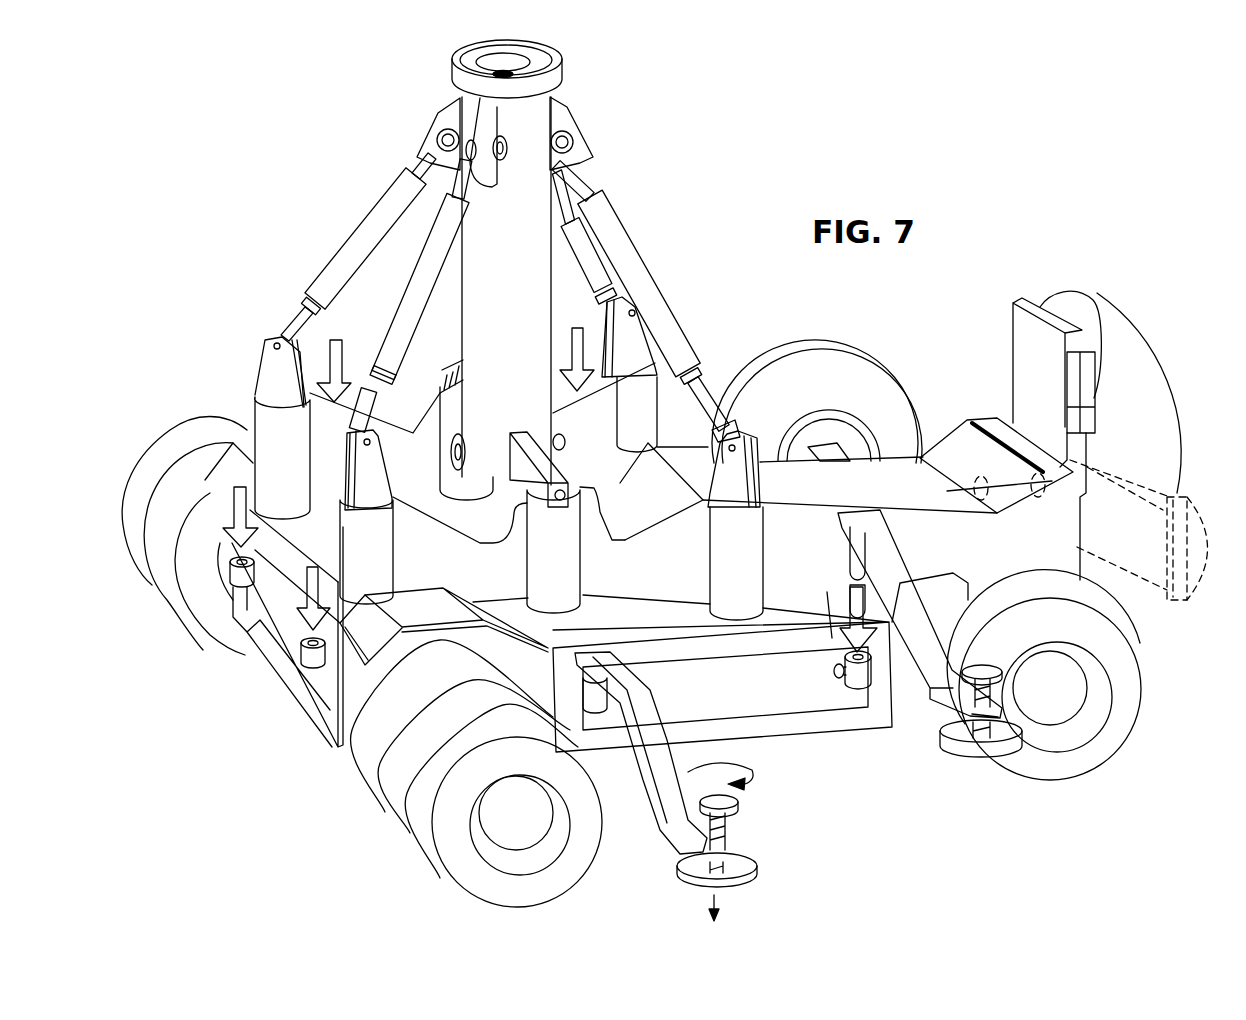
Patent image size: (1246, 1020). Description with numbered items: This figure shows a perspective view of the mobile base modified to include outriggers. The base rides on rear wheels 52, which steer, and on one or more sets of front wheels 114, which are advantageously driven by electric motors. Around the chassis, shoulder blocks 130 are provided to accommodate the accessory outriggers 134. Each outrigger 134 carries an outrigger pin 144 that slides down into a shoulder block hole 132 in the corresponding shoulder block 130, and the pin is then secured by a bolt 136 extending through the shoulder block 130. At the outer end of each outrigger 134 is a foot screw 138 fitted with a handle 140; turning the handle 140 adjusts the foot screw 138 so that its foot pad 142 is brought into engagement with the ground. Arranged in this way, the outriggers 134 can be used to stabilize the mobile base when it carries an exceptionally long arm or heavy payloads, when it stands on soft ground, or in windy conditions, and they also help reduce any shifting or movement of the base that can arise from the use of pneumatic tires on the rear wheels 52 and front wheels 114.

The rear wheels 52 is at (1127, 690).
The front wheels 114 is at (394, 833).
The shoulder blocks 130 is at (940, 757).
The shoulder block holes 132 is at (833, 648).
The outriggers 134 is at (907, 565).
The bolts 136 is at (834, 672).
The foot screws 138 is at (725, 833).
The handles 140 is at (738, 803).
The foot pads 142 is at (740, 867).
The outrigger pins 144 is at (850, 557).